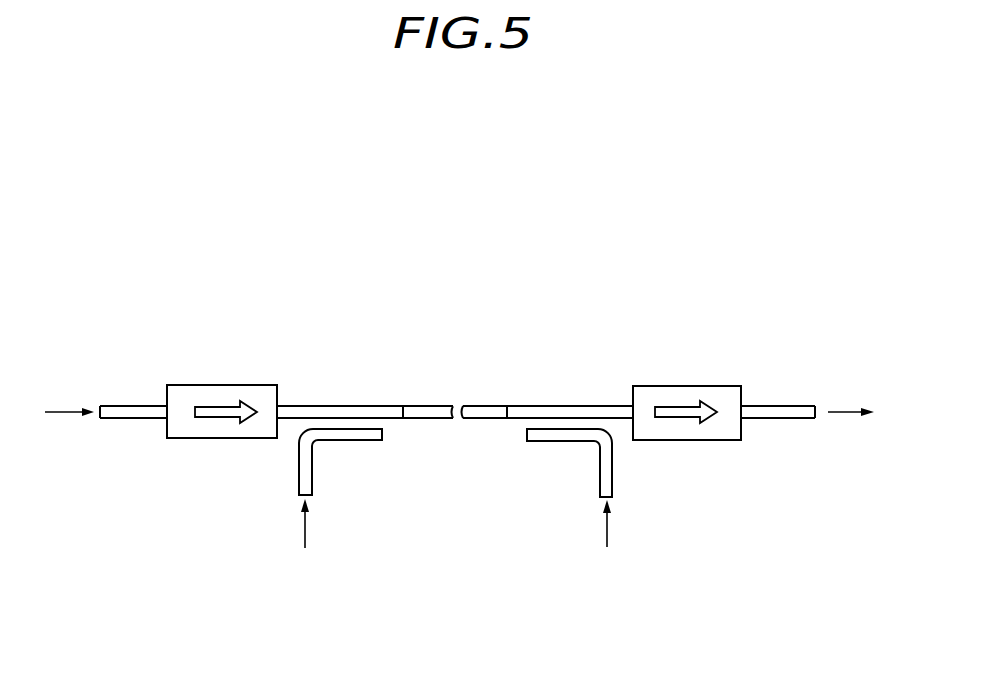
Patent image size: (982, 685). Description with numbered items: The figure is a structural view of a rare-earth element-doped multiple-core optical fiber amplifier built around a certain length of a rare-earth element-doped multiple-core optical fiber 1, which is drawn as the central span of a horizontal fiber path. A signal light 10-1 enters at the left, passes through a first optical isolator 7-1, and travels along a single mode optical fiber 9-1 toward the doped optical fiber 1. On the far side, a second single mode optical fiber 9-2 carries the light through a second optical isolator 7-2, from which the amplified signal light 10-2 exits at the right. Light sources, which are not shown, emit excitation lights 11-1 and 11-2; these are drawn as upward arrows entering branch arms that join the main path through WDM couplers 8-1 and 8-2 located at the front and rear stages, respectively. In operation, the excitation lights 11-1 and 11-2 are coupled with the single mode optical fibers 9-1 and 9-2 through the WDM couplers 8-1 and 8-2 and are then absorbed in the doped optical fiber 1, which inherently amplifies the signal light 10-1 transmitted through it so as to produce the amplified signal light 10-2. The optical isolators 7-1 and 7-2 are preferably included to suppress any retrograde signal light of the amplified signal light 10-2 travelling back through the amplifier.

The rare-earth element-doped multiple-core optical fiber 1 is at (449, 380).
The optical isolator 7-1 is at (165, 383).
The optical isolator 7-2 is at (657, 386).
The WDM coupler 8-1 is at (363, 441).
The WDM coupler 8-2 is at (558, 441).
The single mode optical fiber 9-1 is at (327, 404).
The single mode optical fiber 9-2 is at (573, 404).
The signal light 10-1 is at (55, 418).
The amplified signal light 10-2 is at (848, 418).
The excitation light 11-1 is at (297, 528).
The excitation light 11-2 is at (610, 530).